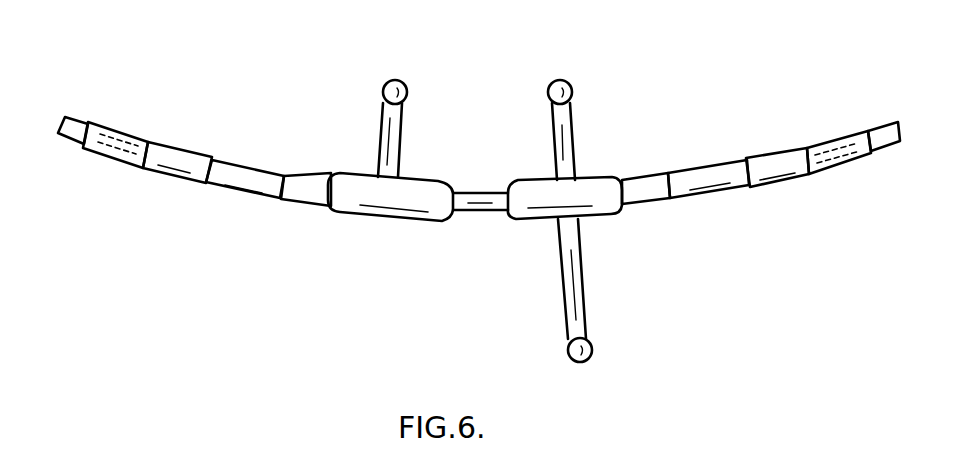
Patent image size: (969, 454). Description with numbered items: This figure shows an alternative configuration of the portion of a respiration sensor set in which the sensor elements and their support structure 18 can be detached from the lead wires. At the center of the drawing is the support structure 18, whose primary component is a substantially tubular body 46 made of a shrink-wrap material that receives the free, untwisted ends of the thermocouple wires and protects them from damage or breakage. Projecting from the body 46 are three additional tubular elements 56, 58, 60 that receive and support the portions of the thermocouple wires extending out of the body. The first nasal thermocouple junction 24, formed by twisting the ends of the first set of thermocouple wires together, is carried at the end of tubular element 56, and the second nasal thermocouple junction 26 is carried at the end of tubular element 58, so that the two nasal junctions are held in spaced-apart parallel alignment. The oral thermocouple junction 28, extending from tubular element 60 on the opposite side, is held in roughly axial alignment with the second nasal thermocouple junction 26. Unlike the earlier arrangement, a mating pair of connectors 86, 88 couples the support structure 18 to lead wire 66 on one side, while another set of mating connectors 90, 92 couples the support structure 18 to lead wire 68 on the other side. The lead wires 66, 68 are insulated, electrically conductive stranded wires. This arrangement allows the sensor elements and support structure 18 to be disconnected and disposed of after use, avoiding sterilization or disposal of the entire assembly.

The support structure 18 is at (491, 220).
The first nasal thermocouple junction 24 is at (410, 84).
The second nasal thermocouple junction 26 is at (576, 80).
The oral thermocouple junction 28 is at (590, 364).
The tubular body 46 is at (402, 222).
The tubular element 56 is at (403, 139).
The tubular element 58 is at (574, 135).
The tubular element 60 is at (584, 281).
The lead wire 66 is at (76, 142).
The lead wire 68 is at (881, 147).
The connector 86 is at (187, 152).
The connector 88 is at (127, 134).
The connector 90 is at (777, 124).
The connector 92 is at (835, 141).